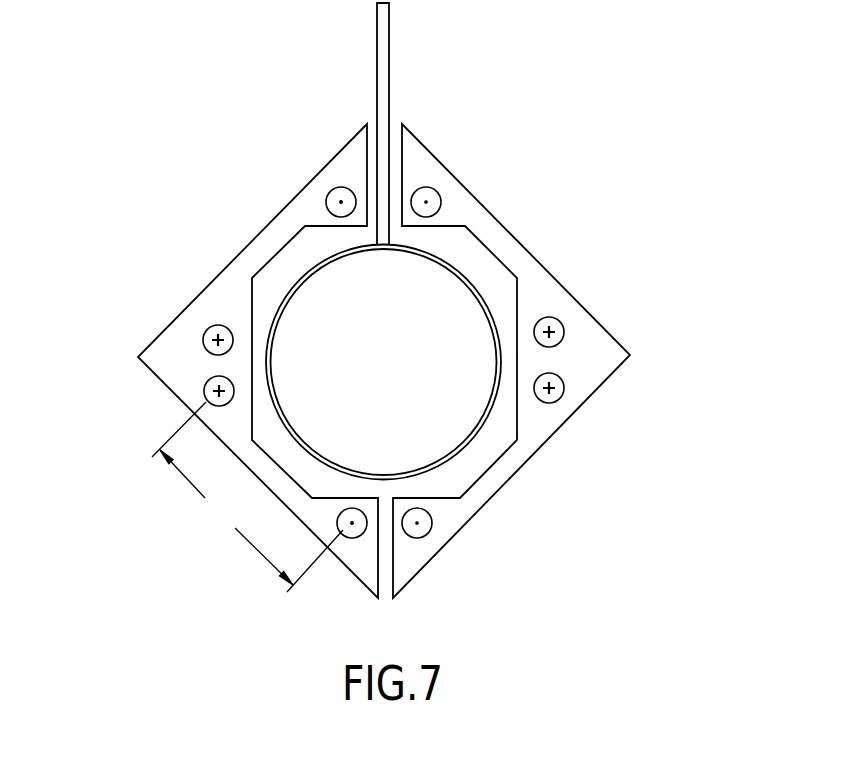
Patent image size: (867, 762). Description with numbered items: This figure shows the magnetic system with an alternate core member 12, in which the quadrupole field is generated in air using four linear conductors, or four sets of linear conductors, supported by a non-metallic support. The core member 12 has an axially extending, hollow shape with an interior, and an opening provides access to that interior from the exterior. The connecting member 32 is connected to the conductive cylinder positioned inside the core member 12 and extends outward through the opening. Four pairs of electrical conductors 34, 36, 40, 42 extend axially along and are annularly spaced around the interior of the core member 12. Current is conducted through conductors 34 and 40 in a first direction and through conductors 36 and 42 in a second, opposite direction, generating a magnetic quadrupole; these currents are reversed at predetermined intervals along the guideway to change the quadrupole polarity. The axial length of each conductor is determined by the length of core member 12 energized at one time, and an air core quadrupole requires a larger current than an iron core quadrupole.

The core member 12 is at (388, 363).
The connecting member 32 is at (389, 24).
The pair of conductors 34 is at (448, 208).
The pair of conductors 36 is at (585, 349).
The pair of conductors 40 is at (403, 545).
The pair of conductors 42 is at (182, 365).